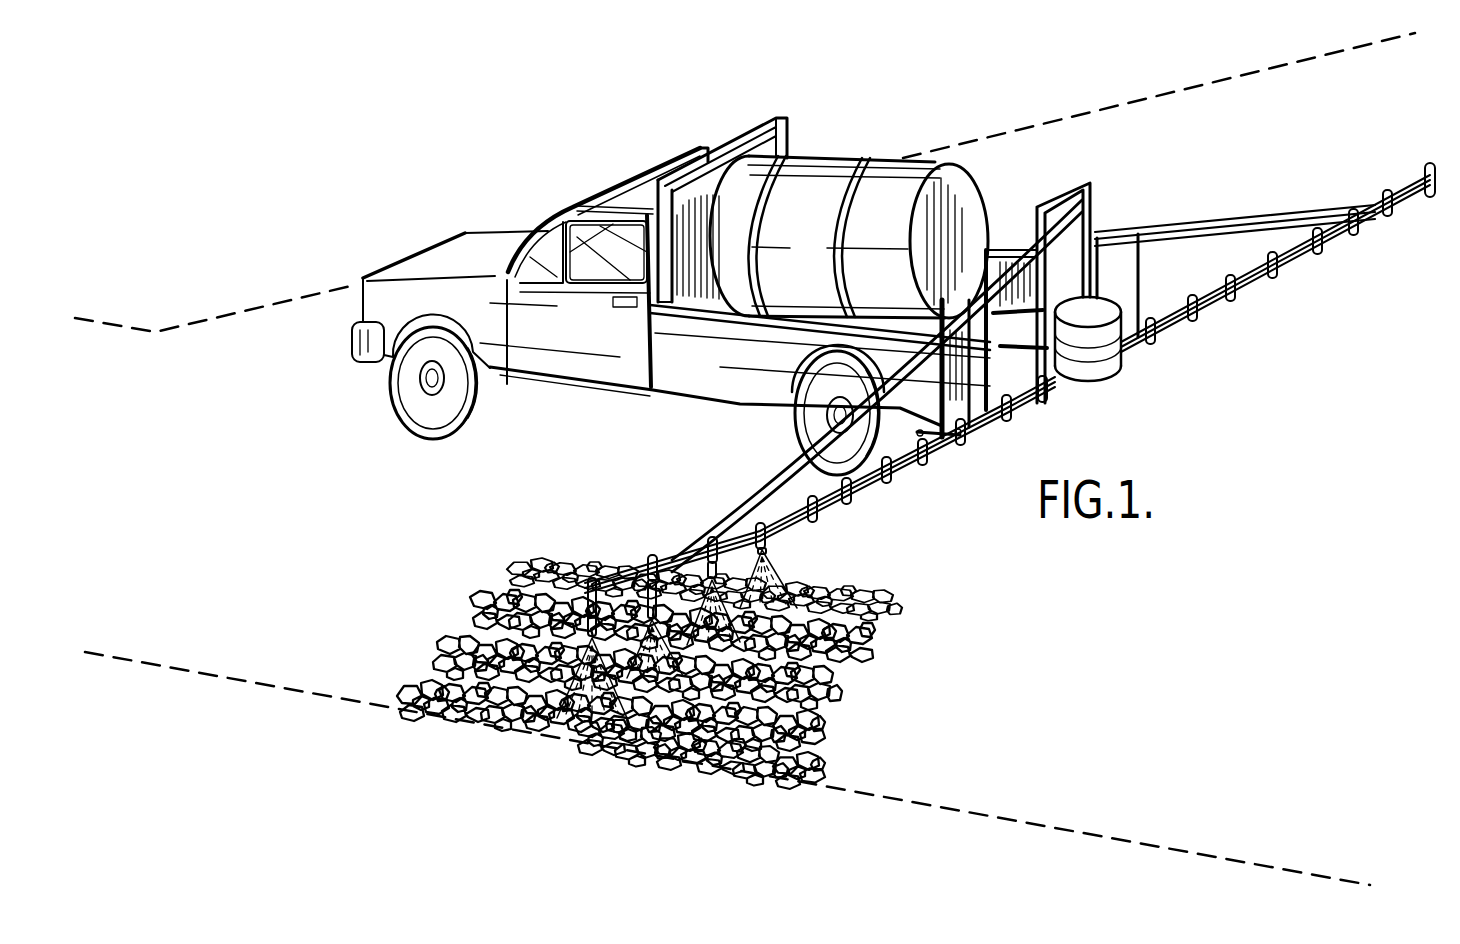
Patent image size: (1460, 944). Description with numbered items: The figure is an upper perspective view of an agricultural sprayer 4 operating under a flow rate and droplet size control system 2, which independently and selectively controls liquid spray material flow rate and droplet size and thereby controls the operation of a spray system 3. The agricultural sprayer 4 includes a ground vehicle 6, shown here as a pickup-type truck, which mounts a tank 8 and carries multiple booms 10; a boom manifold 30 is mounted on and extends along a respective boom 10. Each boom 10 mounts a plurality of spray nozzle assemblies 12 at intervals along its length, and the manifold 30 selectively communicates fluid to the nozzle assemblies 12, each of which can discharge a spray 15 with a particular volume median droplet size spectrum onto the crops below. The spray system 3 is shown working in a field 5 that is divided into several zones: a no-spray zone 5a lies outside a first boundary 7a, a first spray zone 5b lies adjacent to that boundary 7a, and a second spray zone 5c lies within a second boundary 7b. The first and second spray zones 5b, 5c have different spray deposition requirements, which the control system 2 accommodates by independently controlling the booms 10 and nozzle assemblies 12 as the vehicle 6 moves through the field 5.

The flow rate and droplet size control system 2 is at (676, 558).
The spray system 3 is at (551, 119).
The agricultural sprayer 4 is at (783, 110).
The field 5 is at (1327, 594).
The no-spray zone 5a is at (437, 809).
The first spray zone 5b is at (387, 616).
The second spray zone 5c is at (357, 244).
The vehicle 6 is at (690, 150).
The first boundary 7a is at (1070, 826).
The second boundary 7b is at (1196, 85).
The tank 8 is at (852, 158).
The boom 10 is at (1217, 225).
The spray nozzle assembly 12 is at (808, 515).
The spray 15 is at (578, 730).
The boom manifold 30 is at (1170, 294).